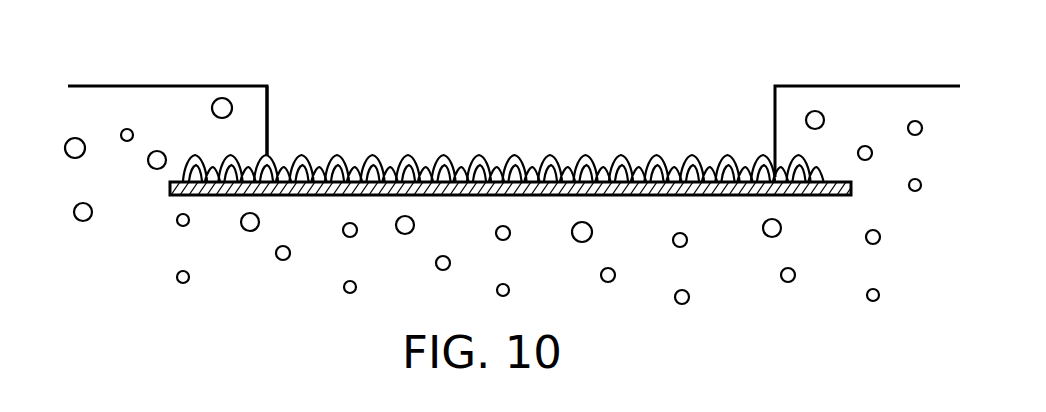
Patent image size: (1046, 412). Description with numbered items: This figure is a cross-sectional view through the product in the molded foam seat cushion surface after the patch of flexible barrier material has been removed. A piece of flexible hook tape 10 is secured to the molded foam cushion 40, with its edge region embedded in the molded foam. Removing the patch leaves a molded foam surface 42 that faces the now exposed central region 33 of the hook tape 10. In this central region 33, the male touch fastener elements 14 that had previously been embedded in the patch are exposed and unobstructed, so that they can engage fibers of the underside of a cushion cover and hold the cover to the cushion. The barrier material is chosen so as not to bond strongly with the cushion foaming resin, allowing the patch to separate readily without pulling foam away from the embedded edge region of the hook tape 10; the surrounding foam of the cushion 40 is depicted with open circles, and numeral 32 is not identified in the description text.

The hook tape 10 is at (386, 137).
The touch fastener elements 14 is at (515, 160).
The particles 32 is at (214, 147).
The central region 33 is at (594, 114).
The molded foam cushion 40 is at (93, 86).
The molded foam surface 42 is at (268, 98).